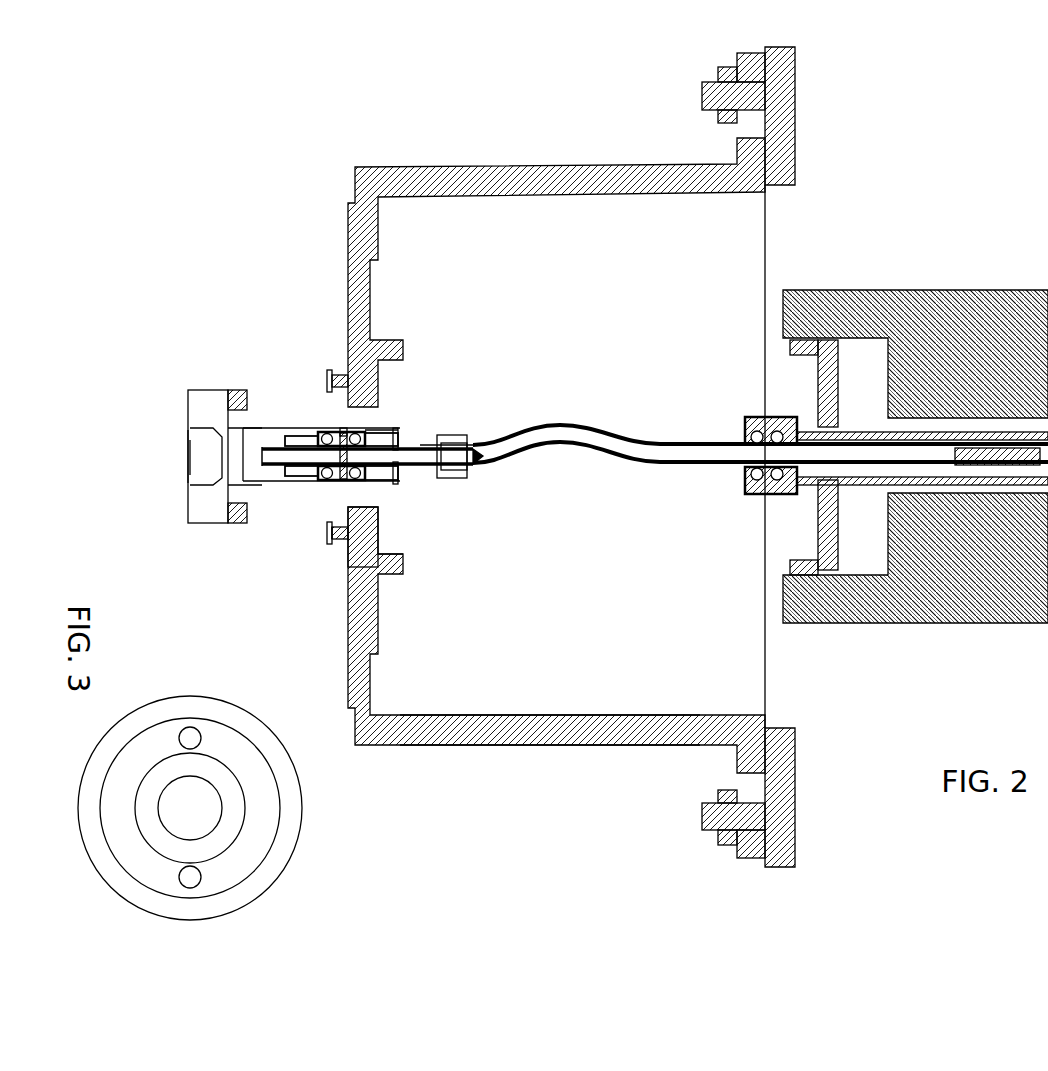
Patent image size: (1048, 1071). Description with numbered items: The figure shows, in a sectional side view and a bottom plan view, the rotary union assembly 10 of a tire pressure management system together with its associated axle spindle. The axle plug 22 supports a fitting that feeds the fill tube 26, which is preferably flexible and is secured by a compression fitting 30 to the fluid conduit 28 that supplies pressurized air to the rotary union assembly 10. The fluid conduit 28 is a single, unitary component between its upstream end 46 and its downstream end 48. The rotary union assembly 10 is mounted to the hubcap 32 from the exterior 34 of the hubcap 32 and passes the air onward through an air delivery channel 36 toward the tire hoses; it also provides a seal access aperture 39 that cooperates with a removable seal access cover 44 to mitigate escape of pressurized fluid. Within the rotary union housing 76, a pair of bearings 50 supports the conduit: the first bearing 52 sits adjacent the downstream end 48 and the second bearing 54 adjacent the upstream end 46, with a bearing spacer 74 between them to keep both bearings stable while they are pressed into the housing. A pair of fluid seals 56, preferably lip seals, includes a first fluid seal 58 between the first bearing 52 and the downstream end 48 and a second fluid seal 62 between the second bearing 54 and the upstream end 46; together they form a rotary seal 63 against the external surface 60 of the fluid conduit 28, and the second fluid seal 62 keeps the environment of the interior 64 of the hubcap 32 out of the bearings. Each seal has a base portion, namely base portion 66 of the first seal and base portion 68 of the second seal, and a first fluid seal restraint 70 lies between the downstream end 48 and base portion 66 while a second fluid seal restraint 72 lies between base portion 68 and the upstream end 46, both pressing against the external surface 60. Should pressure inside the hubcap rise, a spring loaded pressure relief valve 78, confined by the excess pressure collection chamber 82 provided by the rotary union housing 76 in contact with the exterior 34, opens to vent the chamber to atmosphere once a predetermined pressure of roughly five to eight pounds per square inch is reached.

In FIG. 2, the rotary union assembly 10 is at (232, 325).
In FIG. 2, the axle plug 22 is at (818, 527).
In FIG. 2, the fill tube 26 is at (684, 442).
In FIG. 2, the fluid conduit 28 is at (410, 465).
In FIG. 2, the compression fitting 30 is at (448, 478).
In FIG. 2, the hubcap 32 is at (493, 762).
In FIG. 2, the exterior of the hubcap 34 is at (444, 745).
In FIG. 2, the air delivery channel 36 is at (238, 386).
In FIG. 2, the seal access aperture 39 is at (184, 417).
In FIG. 2, the seal access cover 44 is at (184, 469).
In FIG. 2, the upstream end 46 is at (486, 462).
In FIG. 2, the downstream end 48 is at (258, 482).
In FIG. 2, the pair of bearings 50 is at (340, 422).
In FIG. 2, the first bearing 52 is at (293, 487).
In FIG. 2, the second bearing 54 is at (380, 428).
In FIG. 2, the pair of fluid seals 56 is at (386, 492).
In FIG. 2, the first fluid seal 58 is at (340, 432).
In FIG. 2, the external surface 60 is at (288, 441).
In FIG. 2, the second fluid seal 62 is at (400, 438).
In FIG. 2, the rotary seal 63 is at (400, 435).
In FIG. 2, the interior of the hubcap 64 is at (532, 715).
In FIG. 2, the base portion of the first fluid seal 66 is at (290, 476).
In FIG. 2, the base portion of the second fluid seal 68 is at (488, 440).
In FIG. 2, the first fluid seal restraint 70 is at (327, 433).
In FIG. 2, the second fluid seal restraint 72 is at (398, 485).
In FIG. 2, the bearing spacer 74 is at (345, 428).
In FIG. 2, the rotary union housing 76 is at (205, 398).
In FIG. 3, the rotary union housing 76 is at (297, 839).
In FIG. 2, the spring loaded pressure relief valve 78 is at (330, 546).
In FIG. 3, the spring loaded pressure relief valve 78 is at (190, 733).
In FIG. 2, the excess pressure collection chamber 82 is at (333, 546).
In FIG. 3, the excess pressure collection chamber 82 is at (257, 770).